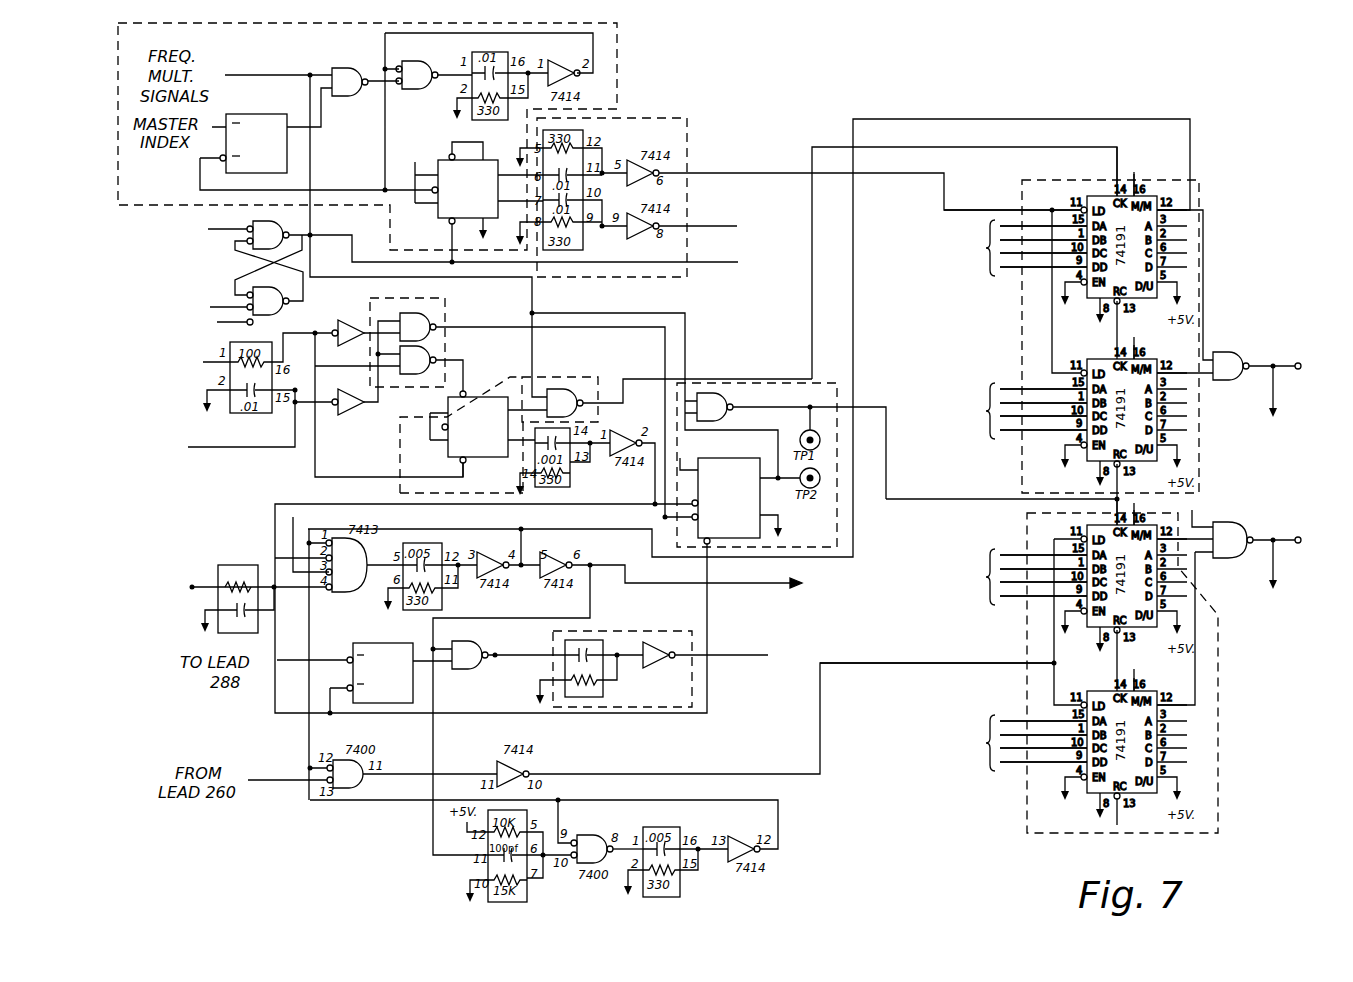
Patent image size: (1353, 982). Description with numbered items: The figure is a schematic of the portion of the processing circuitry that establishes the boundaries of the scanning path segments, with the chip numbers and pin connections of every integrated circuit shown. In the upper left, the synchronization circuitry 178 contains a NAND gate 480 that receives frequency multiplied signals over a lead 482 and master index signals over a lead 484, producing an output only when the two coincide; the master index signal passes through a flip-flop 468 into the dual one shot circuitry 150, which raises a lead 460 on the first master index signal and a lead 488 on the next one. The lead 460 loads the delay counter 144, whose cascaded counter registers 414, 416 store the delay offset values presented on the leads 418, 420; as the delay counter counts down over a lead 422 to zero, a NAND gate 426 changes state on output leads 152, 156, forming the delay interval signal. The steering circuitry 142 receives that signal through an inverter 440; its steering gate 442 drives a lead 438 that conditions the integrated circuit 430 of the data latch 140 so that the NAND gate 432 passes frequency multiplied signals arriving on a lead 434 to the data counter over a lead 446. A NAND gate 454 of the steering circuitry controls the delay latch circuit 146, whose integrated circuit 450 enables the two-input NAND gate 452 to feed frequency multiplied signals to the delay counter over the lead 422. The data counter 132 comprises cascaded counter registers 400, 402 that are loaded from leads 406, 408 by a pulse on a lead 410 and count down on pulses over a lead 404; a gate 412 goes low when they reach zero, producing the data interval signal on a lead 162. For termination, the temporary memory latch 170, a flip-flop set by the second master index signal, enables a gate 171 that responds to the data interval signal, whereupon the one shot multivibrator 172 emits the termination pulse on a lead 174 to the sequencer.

The synchronization circuitry 178 is at (618, 56).
The lead 482 is at (262, 75).
The NAND gate 480 is at (385, 58).
The lead 484 is at (313, 118).
The flip-flop 468 is at (443, 154).
The monostable multivibrator one shot circuitry 150 is at (688, 138).
The lead 460 is at (740, 172).
The lead 488 is at (690, 226).
The output lead 152 is at (210, 305).
The steering circuitry 142 is at (445, 320).
The inverter 440 is at (356, 321).
The steering gate 442 is at (420, 312).
The NAND gate 454 is at (410, 376).
The delay latch circuit 146 is at (508, 375).
The 2-input NAND gate 452 is at (551, 389).
The integrated circuit 450 is at (500, 462).
The lead 438 is at (609, 327).
The lead 434 is at (688, 345).
The lead 422 is at (1068, 148).
The data latch 140 is at (787, 382).
The NAND gate 432 is at (732, 412).
The lead 446 is at (886, 476).
The integrated circuit 430 is at (720, 458).
The lead 162 is at (192, 586).
The temporary memory latch 170 is at (372, 643).
The NAND gate 171 is at (457, 662).
The one shot monostable multivibrator 172 is at (636, 631).
The lead 174 is at (740, 653).
The lead 410 is at (820, 708).
The delay counter 144 is at (1200, 262).
The counter register 414 is at (1100, 197).
The leads 418 is at (990, 248).
The counter register 416 is at (1088, 357).
The leads 420 is at (990, 411).
The NAND gate 426 is at (1228, 352).
The output lead 156 is at (1276, 395).
The lead 404 is at (922, 499).
The data counter 132 is at (1218, 660).
The counter register 400 is at (1100, 632).
The leads 406 is at (990, 578).
The gate 412 is at (1230, 522).
The counter register 402 is at (1143, 795).
The leads 408 is at (990, 744).